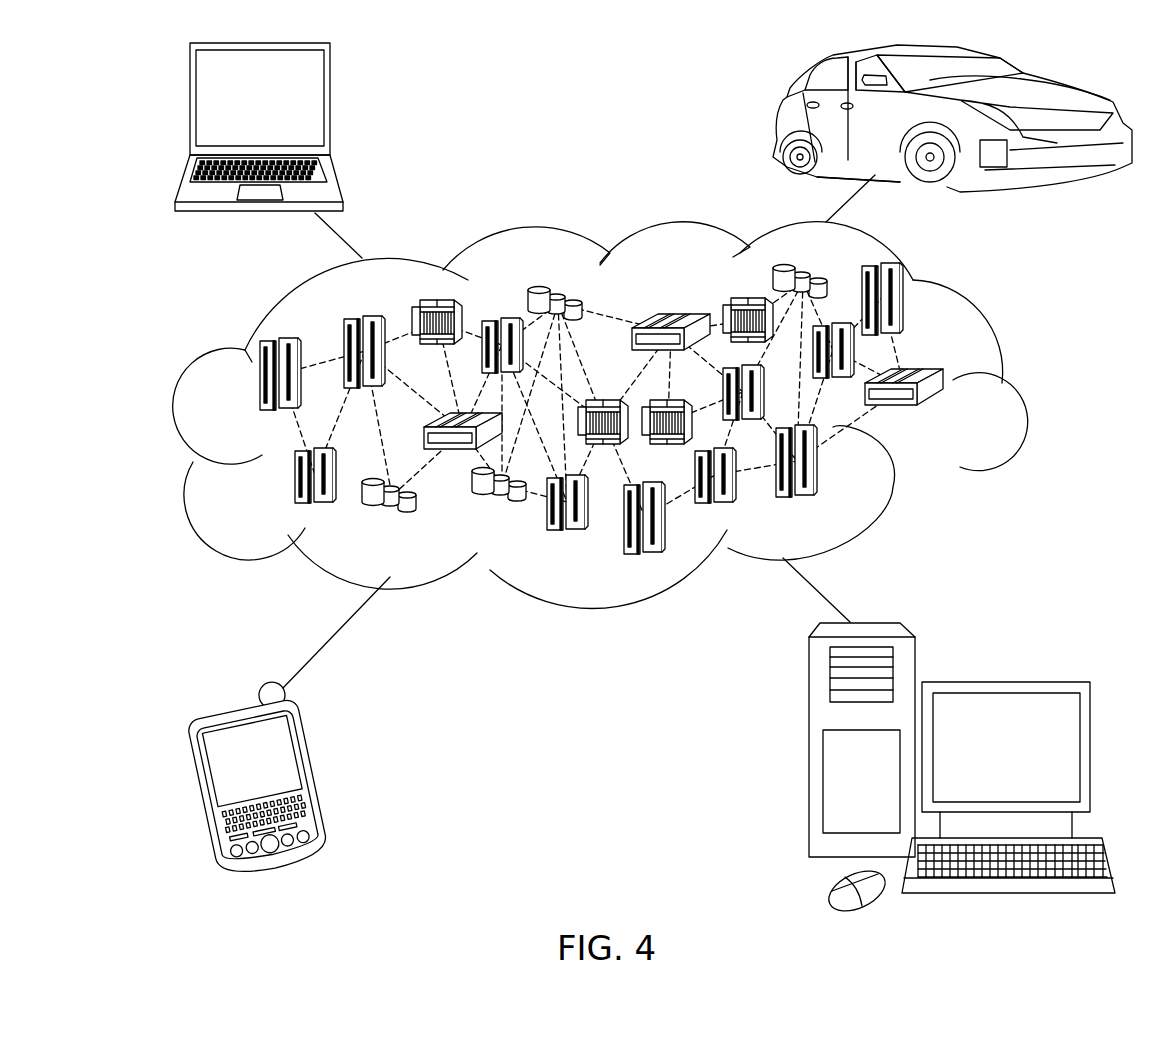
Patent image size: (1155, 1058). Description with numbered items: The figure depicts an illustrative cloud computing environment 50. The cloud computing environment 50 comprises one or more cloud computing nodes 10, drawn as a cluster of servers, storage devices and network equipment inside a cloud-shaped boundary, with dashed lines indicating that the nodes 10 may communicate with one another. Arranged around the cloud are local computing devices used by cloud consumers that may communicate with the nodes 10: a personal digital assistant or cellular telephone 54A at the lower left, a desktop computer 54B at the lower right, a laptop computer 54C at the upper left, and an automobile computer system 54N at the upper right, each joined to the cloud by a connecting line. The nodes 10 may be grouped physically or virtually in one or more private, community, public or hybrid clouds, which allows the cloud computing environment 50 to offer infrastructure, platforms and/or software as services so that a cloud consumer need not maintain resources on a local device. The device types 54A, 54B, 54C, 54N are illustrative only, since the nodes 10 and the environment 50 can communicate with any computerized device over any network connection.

The cloud computing node 10 is at (945, 417).
The cloud computing environment 50 is at (1002, 385).
The personal digital assistant (PDA) or cellular telephone 54A is at (320, 782).
The desktop computer 54B is at (1002, 682).
The laptop computer 54C is at (330, 107).
The automobile computer system 54N is at (778, 118).